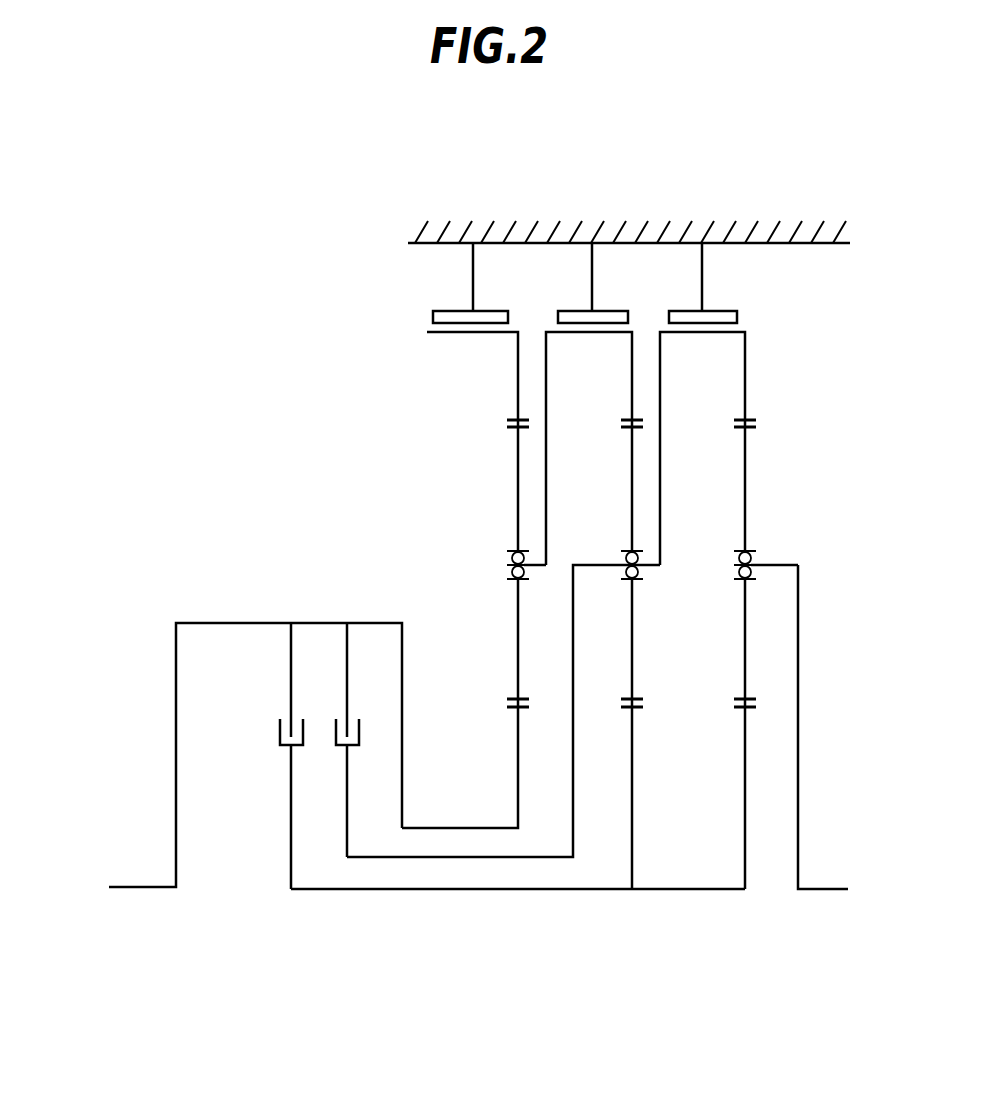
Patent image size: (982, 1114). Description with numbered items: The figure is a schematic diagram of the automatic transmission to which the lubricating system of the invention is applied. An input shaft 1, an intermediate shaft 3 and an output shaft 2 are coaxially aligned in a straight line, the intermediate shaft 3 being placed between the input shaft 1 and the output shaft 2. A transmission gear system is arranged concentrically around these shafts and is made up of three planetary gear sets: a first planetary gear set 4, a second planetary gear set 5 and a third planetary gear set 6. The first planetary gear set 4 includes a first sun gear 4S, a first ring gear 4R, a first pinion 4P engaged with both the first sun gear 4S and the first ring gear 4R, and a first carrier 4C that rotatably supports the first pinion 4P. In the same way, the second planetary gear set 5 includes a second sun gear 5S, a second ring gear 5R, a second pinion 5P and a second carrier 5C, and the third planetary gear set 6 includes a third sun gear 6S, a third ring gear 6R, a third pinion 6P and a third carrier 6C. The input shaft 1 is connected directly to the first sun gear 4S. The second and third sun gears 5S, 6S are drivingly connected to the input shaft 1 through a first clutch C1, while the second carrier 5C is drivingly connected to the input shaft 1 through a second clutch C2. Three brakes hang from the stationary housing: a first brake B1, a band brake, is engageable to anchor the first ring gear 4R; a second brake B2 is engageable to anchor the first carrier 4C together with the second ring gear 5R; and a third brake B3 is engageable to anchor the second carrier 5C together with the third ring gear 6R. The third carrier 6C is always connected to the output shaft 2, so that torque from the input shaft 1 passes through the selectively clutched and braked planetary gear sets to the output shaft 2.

The input shaft 1 is at (167, 887).
The output shaft 2 is at (815, 889).
The intermediate shaft 3 is at (603, 891).
The first planetary gear set 4 is at (481, 580).
The second planetary gear set 5 is at (521, 610).
The third planetary gear set 6 is at (747, 610).
The first ring gear 4R is at (517, 388).
The first pinion 4P is at (517, 487).
The first carrier 4C is at (537, 565).
The first sun gear 4S is at (512, 606).
The second ring gear 5R is at (632, 380).
The second pinion 5P is at (632, 476).
The second carrier 5C is at (590, 565).
The second sun gear 5S is at (641, 592).
The third ring gear 6R is at (745, 383).
The third pinion 6P is at (745, 490).
The third carrier 6C is at (783, 565).
The third sun gear 6S is at (753, 589).
The first brake B1 is at (496, 311).
The second brake B2 is at (622, 311).
The third brake B3 is at (732, 311).
The first clutch C1 is at (283, 746).
The second clutch C2 is at (352, 746).